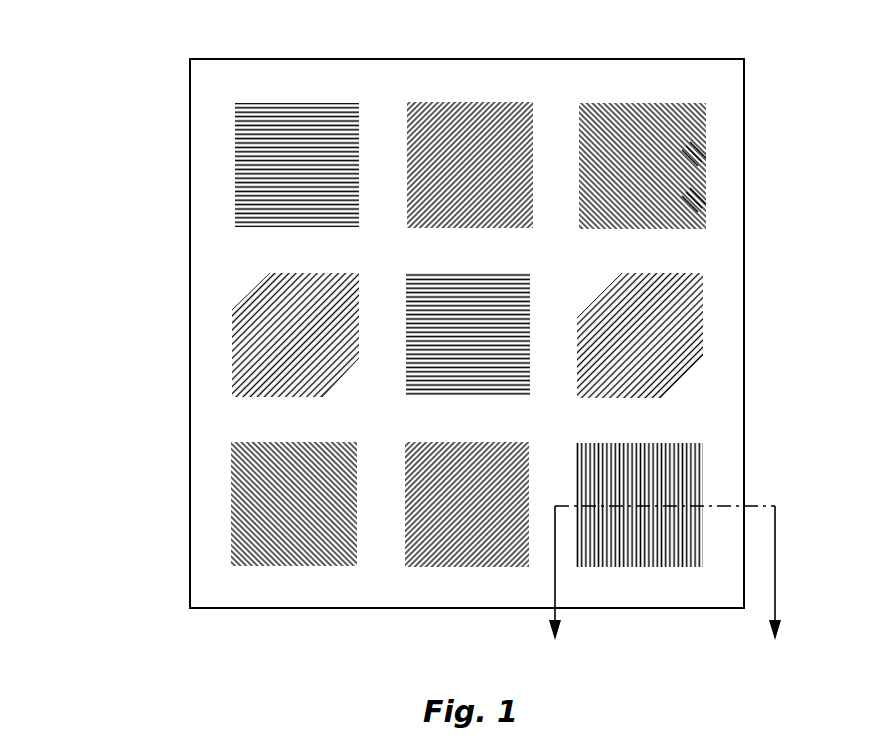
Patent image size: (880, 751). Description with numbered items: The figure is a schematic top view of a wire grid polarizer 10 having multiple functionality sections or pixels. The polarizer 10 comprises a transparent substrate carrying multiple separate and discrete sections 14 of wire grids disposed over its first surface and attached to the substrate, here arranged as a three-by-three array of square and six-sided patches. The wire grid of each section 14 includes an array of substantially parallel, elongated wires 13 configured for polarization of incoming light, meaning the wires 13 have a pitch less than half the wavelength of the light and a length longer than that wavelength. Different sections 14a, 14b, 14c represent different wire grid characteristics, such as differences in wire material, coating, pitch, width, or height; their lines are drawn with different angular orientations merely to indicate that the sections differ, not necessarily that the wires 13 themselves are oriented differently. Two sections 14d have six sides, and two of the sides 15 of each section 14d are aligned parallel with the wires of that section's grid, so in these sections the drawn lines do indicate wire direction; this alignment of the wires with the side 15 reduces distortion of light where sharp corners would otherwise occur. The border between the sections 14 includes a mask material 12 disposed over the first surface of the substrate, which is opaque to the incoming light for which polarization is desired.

The wire grid polarizer 10 is at (125, 160).
The mask material 12 is at (552, 90).
The wires 13 is at (708, 203).
The sections 14 is at (708, 155).
The section 14a is at (300, 118).
The section 14b is at (469, 117).
The section 14c is at (650, 118).
The six-sided section 14d is at (254, 343).
The sides 15 is at (244, 296).